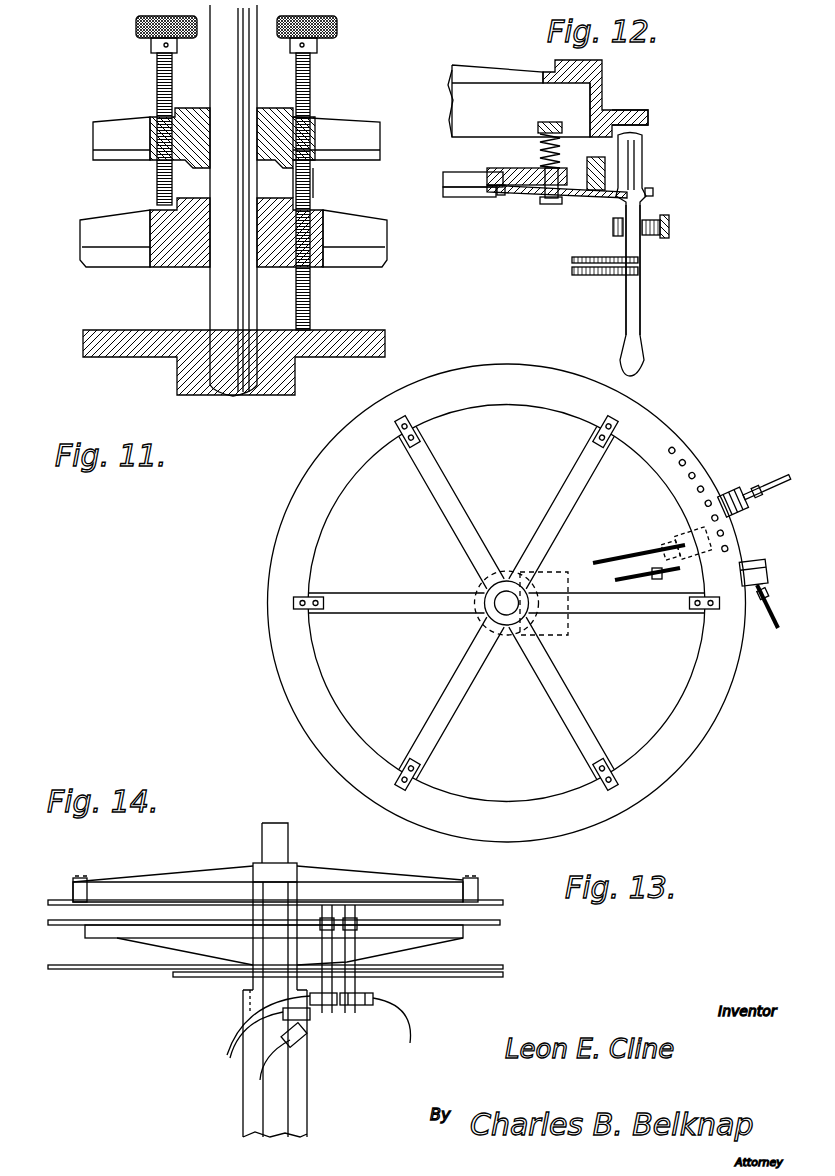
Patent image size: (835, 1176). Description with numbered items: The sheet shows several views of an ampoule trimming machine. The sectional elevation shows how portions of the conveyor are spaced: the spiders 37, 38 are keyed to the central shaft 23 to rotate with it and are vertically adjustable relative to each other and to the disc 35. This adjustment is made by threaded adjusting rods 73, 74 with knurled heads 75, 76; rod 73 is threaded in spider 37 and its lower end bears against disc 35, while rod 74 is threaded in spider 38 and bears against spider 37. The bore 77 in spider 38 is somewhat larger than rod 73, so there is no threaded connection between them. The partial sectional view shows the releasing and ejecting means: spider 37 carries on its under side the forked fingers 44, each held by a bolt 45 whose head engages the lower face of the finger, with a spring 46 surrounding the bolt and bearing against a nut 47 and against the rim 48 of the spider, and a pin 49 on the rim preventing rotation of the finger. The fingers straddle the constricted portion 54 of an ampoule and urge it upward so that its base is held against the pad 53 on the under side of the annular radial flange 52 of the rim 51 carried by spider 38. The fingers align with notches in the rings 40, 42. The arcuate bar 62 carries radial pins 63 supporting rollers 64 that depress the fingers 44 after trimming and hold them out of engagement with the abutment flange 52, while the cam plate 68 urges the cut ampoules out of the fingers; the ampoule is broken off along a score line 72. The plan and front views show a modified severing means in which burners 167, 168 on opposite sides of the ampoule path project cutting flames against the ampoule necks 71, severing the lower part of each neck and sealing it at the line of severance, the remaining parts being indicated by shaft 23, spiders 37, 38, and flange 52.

In FIG. 11, the shaft 23 is at (210, 292).
In FIG. 13, the shaft 23 is at (507, 627).
In FIG. 14, the shaft 23 is at (288, 846).
In FIG. 11, the disc 35 is at (128, 334).
In FIG. 14, the disc 35 is at (376, 970).
In FIG. 11, the spider 37 is at (103, 270).
In FIG. 14, the spider 37 is at (500, 925).
In FIG. 11, the spider 38 is at (119, 160).
In FIG. 12, the spider 38 is at (478, 90).
In FIG. 13, the spider 38 is at (466, 520).
In FIG. 14, the spider 38 is at (333, 878).
In FIG. 12, the ring 40 is at (572, 259).
In FIG. 12, the ring 42 is at (578, 276).
In FIG. 12, the forked finger 44 is at (575, 196).
In FIG. 12, the bolt 45 is at (545, 200).
In FIG. 12, the spring 46 is at (540, 150).
In FIG. 12, the nut 47 is at (552, 122).
In FIG. 12, the rim 48 is at (490, 172).
In FIG. 12, the pin 49 is at (497, 192).
In FIG. 12, the rim 51 is at (602, 90).
In FIG. 13, the annular radial flange 52 is at (712, 716).
In FIG. 14, the annular radial flange 52 is at (503, 903).
In FIG. 12, the pad 53 is at (648, 121).
In FIG. 12, the constricted portion 54 is at (650, 200).
In FIG. 12, the arcuate bar 62 is at (598, 202).
In FIG. 12, the radial pin 63 is at (596, 160).
In FIG. 12, the roller 64 is at (642, 160).
In FIG. 12, the cam plate 68 is at (668, 240).
In FIG. 13, the neck portion 71 is at (690, 475).
In FIG. 12, the score line 72 is at (628, 292).
In FIG. 11, the threaded adjusting rod 73 is at (313, 182).
In FIG. 11, the threaded adjusting rod 74 is at (157, 70).
In FIG. 11, the knurled head 75 is at (337, 30).
In FIG. 11, the knurled head 76 is at (136, 27).
In FIG. 11, the bore 77 is at (313, 124).
In FIG. 13, the burner 167 is at (740, 494).
In FIG. 14, the burner 167 is at (353, 1016).
In FIG. 13, the burner 168 is at (740, 536).
In FIG. 14, the burner 168 is at (336, 1022).